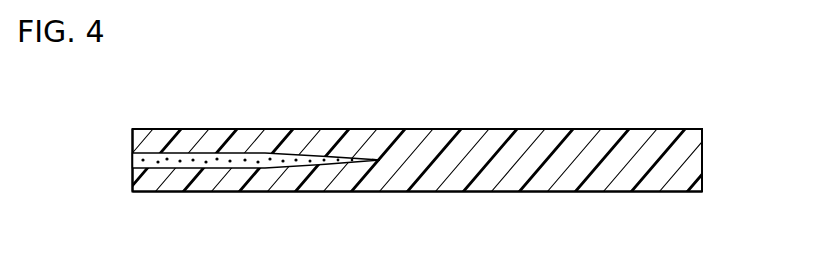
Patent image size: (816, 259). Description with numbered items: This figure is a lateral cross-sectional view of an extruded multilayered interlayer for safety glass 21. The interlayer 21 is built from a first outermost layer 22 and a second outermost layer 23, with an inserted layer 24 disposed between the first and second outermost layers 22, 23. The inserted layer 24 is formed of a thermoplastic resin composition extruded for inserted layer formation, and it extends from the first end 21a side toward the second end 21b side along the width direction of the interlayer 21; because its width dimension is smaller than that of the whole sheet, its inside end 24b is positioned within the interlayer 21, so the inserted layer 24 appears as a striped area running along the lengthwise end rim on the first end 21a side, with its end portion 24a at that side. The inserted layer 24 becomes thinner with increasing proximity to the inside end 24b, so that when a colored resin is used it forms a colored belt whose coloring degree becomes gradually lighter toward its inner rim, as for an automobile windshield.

The multilayered interlayer for safety glass 21 is at (617, 126).
The first end 21a is at (132, 143).
The second end 21b is at (702, 147).
The first outermost layer 22 is at (271, 138).
The second outermost layer 23 is at (256, 192).
The inserted layer 24 is at (202, 158).
The end portion of conductive member 24a is at (132, 160).
The inside end 24b is at (380, 160).